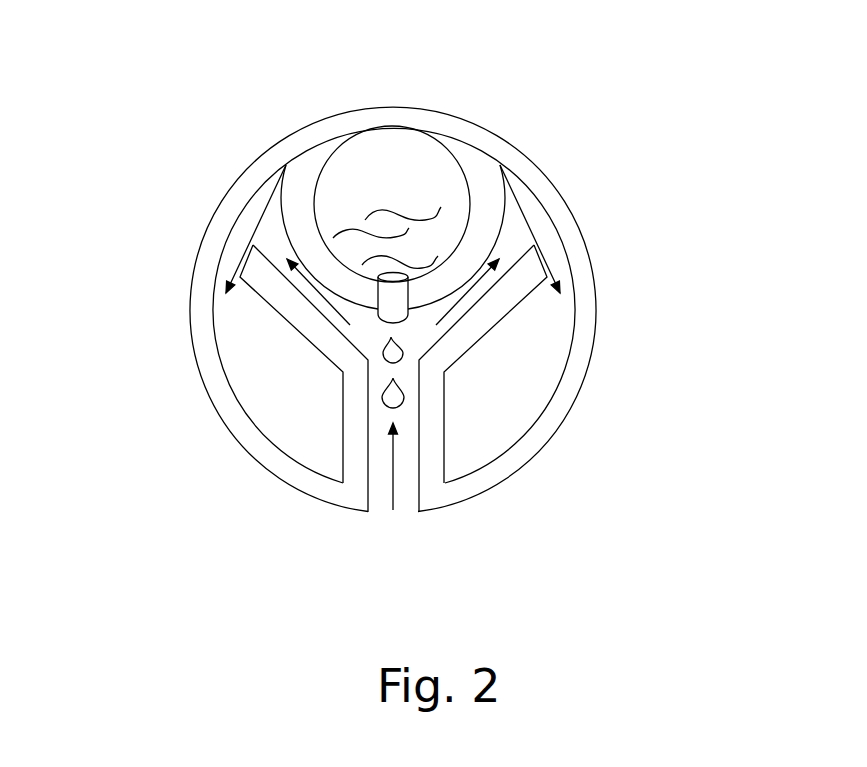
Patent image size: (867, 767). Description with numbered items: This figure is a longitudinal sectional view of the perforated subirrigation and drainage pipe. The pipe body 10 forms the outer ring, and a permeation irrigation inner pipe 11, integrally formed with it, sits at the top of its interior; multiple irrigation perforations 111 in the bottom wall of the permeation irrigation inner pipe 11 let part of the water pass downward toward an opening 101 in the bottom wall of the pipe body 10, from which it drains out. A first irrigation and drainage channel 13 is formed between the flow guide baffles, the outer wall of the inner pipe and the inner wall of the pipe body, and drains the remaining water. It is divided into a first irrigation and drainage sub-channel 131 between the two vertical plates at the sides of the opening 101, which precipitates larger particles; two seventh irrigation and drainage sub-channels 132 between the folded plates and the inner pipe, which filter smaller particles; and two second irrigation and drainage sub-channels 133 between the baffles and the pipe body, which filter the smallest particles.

The pipe body 10 is at (555, 185).
The permeation irrigation inner pipe 11 is at (303, 173).
The irrigation perforations 111 is at (388, 305).
The first irrigation and drainage channel 13 is at (426, 356).
The first irrigation and drainage sub-channel 131 is at (408, 465).
The seventh irrigation and drainage sub-channel 132 is at (522, 257).
The second irrigation and drainage sub-channel 133 is at (525, 362).
The opening 101 is at (397, 512).